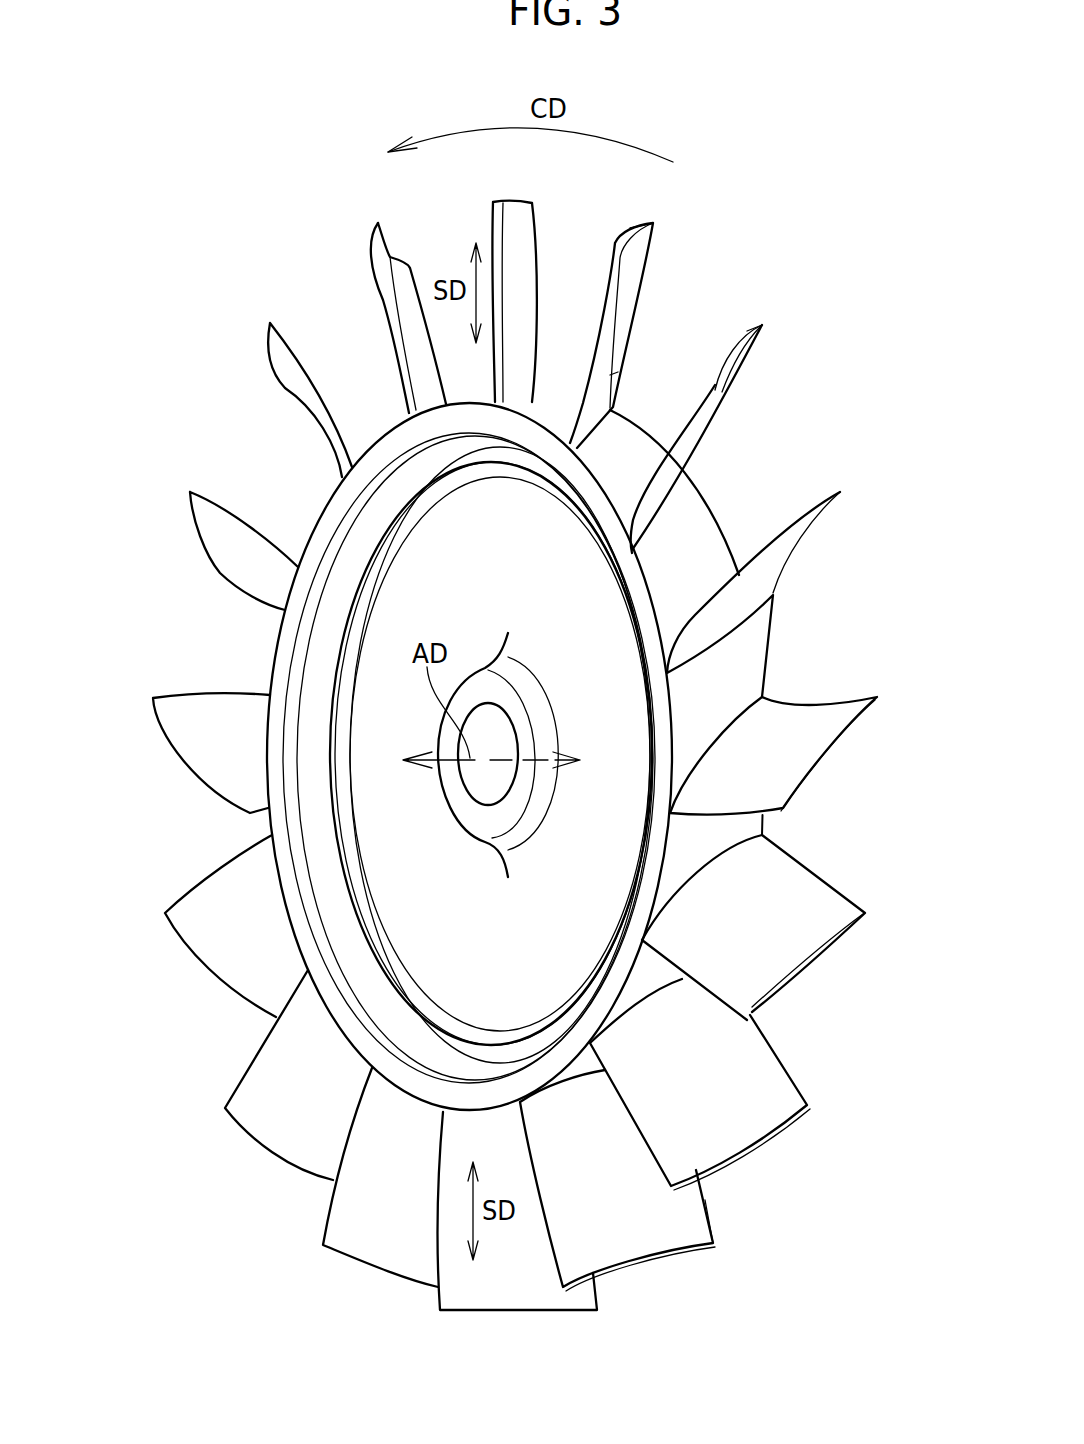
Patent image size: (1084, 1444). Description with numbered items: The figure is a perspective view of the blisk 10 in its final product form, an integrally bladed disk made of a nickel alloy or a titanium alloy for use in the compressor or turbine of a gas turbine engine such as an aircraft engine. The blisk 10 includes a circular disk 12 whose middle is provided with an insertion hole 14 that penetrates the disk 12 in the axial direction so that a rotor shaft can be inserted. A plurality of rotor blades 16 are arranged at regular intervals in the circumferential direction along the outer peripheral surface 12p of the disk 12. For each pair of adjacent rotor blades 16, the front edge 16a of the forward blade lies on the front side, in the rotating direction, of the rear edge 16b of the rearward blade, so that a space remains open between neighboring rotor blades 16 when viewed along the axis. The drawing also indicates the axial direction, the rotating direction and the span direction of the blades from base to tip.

The blisk 10 is at (773, 130).
The disk 12 is at (277, 670).
The outer peripheral surface 12p is at (665, 585).
The insertion hole 14 is at (490, 803).
The rotor blade 16 is at (393, 287).
The front edge 16a is at (622, 370).
The rear edge 16b is at (650, 252).